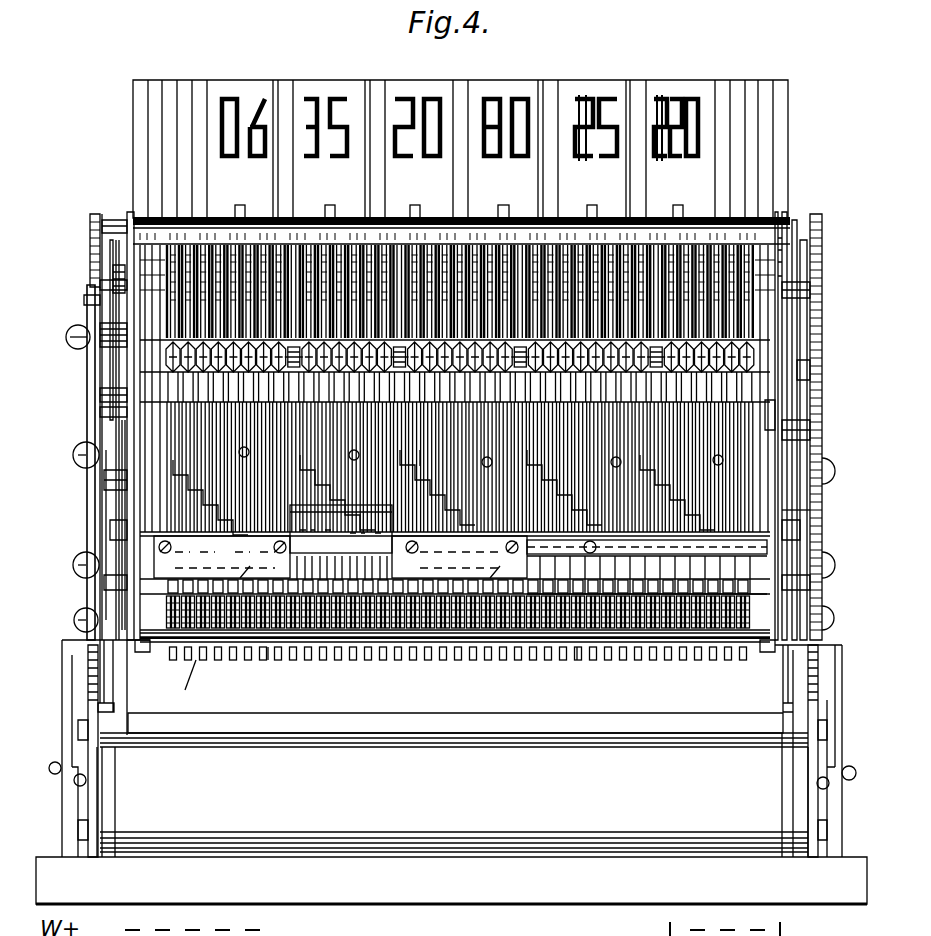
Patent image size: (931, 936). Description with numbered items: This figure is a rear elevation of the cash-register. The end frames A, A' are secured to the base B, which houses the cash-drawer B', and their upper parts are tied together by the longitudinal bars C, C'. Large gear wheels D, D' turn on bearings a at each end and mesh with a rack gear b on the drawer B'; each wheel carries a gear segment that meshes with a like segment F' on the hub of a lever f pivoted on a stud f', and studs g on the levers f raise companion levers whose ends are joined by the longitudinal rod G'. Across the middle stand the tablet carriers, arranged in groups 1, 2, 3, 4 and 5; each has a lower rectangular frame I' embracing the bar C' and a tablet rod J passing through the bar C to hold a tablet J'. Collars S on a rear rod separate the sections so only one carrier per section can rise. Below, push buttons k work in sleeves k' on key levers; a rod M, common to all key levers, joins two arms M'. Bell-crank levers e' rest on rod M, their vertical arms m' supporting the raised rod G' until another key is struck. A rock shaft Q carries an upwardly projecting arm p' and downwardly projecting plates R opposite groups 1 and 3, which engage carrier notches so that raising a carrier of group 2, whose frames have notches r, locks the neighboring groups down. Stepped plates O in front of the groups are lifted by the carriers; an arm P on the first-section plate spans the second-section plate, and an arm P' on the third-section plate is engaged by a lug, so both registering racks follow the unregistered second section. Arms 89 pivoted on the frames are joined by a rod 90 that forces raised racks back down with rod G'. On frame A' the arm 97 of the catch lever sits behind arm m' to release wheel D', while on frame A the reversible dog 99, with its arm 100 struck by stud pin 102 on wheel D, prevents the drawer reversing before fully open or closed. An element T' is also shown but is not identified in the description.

The tablet J' is at (460, 149).
The first group of tablet carriers 1 is at (232, 218).
The second group of tablet carriers 2 is at (352, 218).
The third group of tablet carriers 3 is at (475, 218).
The fourth group of tablet carriers 4 is at (605, 218).
The fifth group of tablet carriers 5 is at (714, 218).
The longitudinal bar C is at (431, 407).
The longitudinal bar C' is at (808, 403).
The stud pin 102 is at (84, 228).
The arm 89 is at (108, 252).
The end frame A is at (98, 427).
The end frame A' is at (813, 426).
The rod 90 is at (112, 283).
The arm of escapement dog 100 is at (88, 301).
The reversible escapement dog 99 is at (90, 353).
The arm of bell-crank lever 97 is at (794, 373).
The segment of gearing F' is at (447, 450).
The tablet rod J is at (456, 390).
The collar S is at (456, 357).
The lower section of tablet carrier I' is at (444, 482).
The plate O is at (697, 463).
The stud f' is at (354, 466).
The arm P' is at (426, 448).
The downwardly projecting plate R is at (340, 557).
The notch r is at (371, 543).
The arm P is at (341, 542).
The rock shaft Q is at (533, 538).
The rod M is at (455, 623).
The horizontal arm M' is at (456, 660).
The sleeve k' is at (272, 665).
The push button k is at (584, 667).
The bearing a is at (449, 463).
The lever f is at (450, 535).
The bar T' is at (101, 525).
The vertical arm of bell-crank lever m' is at (456, 513).
The upwardly projecting arm p' is at (813, 515).
The longitudinal rod G' is at (451, 565).
The stud g is at (450, 588).
The bell-crank lever e' is at (445, 623).
The gear wheel D is at (68, 751).
The gear wheel D' is at (841, 751).
The rack gear b is at (451, 748).
The cash-drawer B' is at (452, 785).
The base B is at (451, 772).